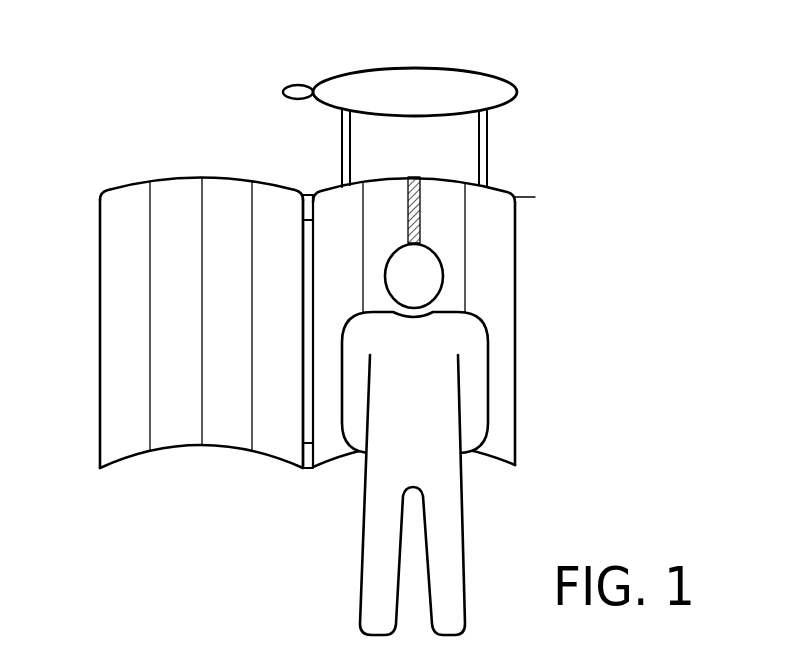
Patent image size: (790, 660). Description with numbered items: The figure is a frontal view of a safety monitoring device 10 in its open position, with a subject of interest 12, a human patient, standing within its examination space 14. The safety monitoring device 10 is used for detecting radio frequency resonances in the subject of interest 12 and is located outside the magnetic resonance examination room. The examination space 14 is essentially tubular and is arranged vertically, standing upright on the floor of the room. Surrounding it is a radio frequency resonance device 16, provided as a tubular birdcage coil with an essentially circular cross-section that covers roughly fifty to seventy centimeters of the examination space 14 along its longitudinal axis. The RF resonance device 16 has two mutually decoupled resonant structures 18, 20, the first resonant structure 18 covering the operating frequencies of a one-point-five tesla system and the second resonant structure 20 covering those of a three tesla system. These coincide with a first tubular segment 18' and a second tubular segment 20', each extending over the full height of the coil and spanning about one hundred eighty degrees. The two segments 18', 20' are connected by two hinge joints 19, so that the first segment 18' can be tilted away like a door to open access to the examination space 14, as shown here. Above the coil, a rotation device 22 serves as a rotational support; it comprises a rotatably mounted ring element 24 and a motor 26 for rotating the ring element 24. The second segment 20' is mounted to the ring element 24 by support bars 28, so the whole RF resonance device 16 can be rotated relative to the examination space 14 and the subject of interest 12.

The safety monitoring device 10 is at (690, 84).
The subject of interest 12 is at (478, 390).
The examination space 14 is at (492, 272).
The radio frequency resonance device 16 is at (93, 186).
The first resonant structure 18 is at (61, 334).
The first tubular segment 18' is at (192, 489).
The hinge joints 19 is at (305, 193).
The second resonant structure 20 is at (555, 331).
The second tubular segment 20' is at (461, 466).
The rotation device 22 is at (345, 65).
The ring element 24 is at (517, 92).
The motor 26 is at (283, 91).
The support bars 28 is at (488, 162).